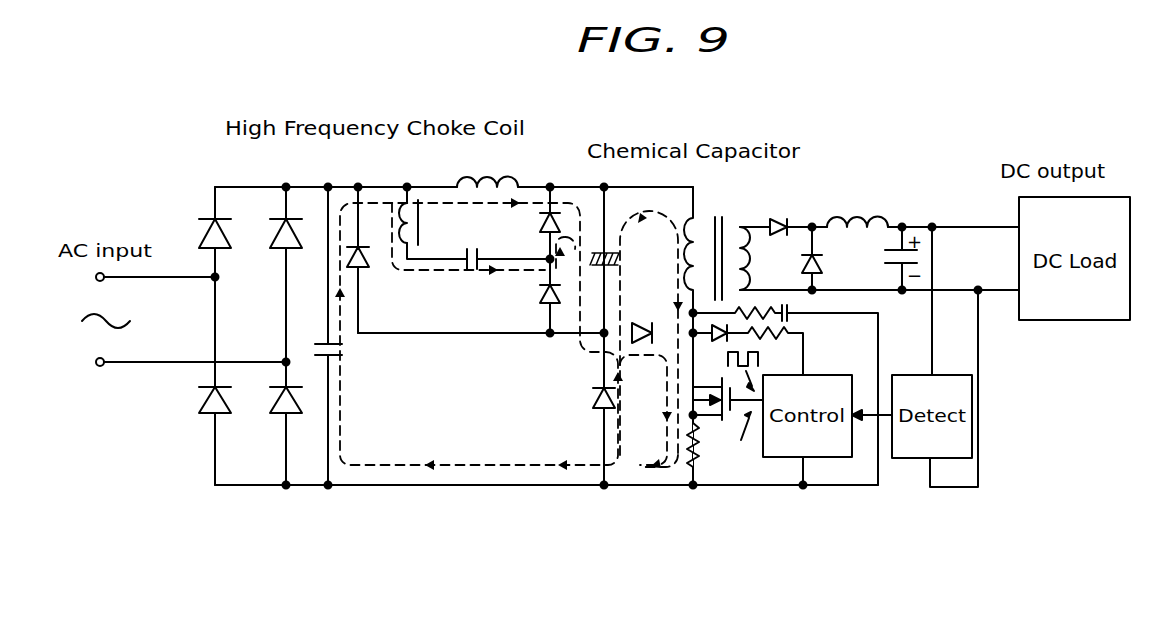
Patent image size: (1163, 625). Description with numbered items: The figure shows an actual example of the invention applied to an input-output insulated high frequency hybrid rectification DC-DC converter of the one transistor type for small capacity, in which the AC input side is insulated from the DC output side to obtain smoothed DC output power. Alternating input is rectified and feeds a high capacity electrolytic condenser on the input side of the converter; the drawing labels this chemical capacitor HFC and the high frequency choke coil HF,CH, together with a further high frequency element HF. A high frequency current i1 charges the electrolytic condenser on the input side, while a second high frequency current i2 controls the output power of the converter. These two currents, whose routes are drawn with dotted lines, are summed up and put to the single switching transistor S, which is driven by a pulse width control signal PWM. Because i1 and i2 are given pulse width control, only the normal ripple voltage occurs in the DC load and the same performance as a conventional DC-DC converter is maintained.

The high frequency choke coil HF,CH is at (891, 208).
The high frequency capacitor HFC is at (432, 336).
The high frequency inductor HF is at (422, 215).
The switching transistor S is at (728, 389).
The pulse width modulation signal PWM is at (735, 409).
The high frequency current i1 is at (479, 334).
The high frequency current i2 is at (649, 339).